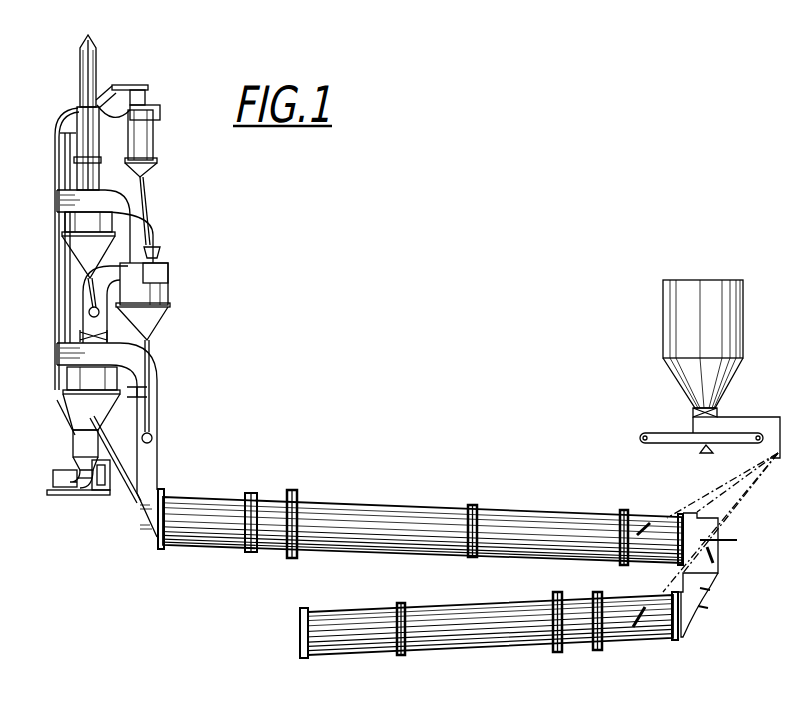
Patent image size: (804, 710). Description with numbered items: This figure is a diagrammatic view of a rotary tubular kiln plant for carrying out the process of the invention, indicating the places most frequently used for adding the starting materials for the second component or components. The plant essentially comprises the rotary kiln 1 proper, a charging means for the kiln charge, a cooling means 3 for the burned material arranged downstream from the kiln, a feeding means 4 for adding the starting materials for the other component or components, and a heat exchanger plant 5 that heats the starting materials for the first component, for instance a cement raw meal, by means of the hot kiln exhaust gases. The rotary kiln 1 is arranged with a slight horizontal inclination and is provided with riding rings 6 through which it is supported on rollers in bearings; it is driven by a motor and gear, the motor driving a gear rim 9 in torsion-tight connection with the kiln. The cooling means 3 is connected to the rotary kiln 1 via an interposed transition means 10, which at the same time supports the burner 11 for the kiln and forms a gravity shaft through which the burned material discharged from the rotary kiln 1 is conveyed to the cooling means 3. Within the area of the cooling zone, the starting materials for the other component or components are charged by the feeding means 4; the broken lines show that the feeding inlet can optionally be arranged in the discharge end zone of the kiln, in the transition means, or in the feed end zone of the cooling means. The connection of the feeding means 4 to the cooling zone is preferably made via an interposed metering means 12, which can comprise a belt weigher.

The rotary kiln 1 is at (402, 508).
The cooling means 3 is at (495, 645).
The feeding means 4 is at (743, 345).
The heat exchanger plant 5 is at (157, 254).
The riding rings 6 is at (468, 505).
The gear rim 9 is at (297, 493).
The transition means 10 is at (711, 588).
The burner 11 is at (737, 540).
The metering means 12 is at (740, 430).